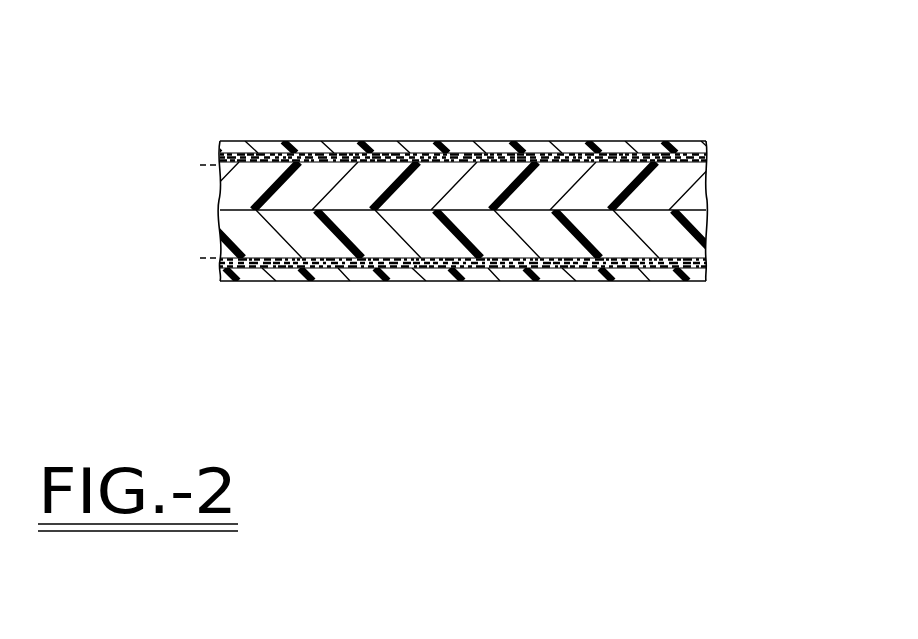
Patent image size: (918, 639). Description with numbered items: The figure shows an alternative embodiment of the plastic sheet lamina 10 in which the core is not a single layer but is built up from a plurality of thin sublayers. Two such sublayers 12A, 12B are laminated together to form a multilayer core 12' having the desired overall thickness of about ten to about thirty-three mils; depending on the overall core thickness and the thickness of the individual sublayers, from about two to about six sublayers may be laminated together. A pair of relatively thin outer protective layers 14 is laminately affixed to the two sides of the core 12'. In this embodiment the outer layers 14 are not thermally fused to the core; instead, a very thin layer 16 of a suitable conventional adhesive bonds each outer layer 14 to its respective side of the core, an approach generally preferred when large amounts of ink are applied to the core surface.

The plastic sheet lamina 10 is at (632, 132).
The multilayer core 12' is at (175, 211).
The sublayer 12A is at (705, 183).
The sublayer 12B is at (705, 242).
The outer protective layer 14 is at (294, 152).
The adhesive layer 16 is at (429, 152).